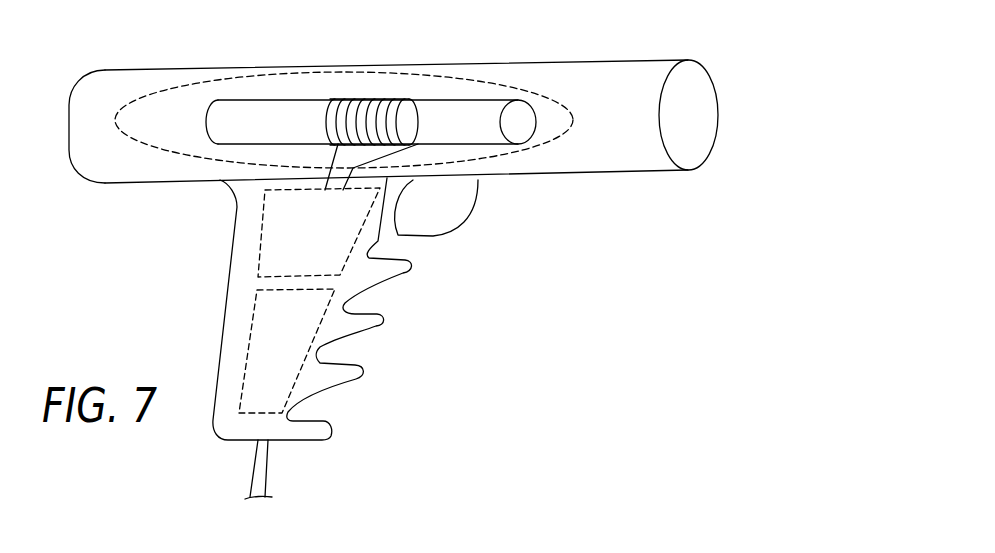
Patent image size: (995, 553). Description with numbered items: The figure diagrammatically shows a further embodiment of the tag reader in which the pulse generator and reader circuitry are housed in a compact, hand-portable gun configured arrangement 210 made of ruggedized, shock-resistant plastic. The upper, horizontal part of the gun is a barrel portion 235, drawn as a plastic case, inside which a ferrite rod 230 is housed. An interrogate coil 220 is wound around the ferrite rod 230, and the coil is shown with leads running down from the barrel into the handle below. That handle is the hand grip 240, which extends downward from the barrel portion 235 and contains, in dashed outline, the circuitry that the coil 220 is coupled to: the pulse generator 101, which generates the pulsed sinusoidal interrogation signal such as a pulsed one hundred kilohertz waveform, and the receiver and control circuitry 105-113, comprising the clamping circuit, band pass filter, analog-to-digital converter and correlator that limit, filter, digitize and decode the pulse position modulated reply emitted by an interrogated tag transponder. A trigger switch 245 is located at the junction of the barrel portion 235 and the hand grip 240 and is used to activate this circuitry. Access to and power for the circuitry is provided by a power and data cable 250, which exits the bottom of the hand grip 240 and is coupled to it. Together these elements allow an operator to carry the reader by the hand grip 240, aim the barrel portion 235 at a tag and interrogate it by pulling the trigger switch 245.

The hand-portable gun configured arrangement 210 is at (213, 240).
The interrogate coil 220 is at (347, 100).
The ferrite rod 230 is at (473, 100).
The barrel portion 235 is at (673, 171).
The hand grip 240 is at (222, 338).
The trigger switch 245 is at (400, 200).
The pulse generator 101 is at (315, 223).
The receiver and control circuitry 105-113 is at (293, 317).
The power and data cable 250 is at (270, 462).